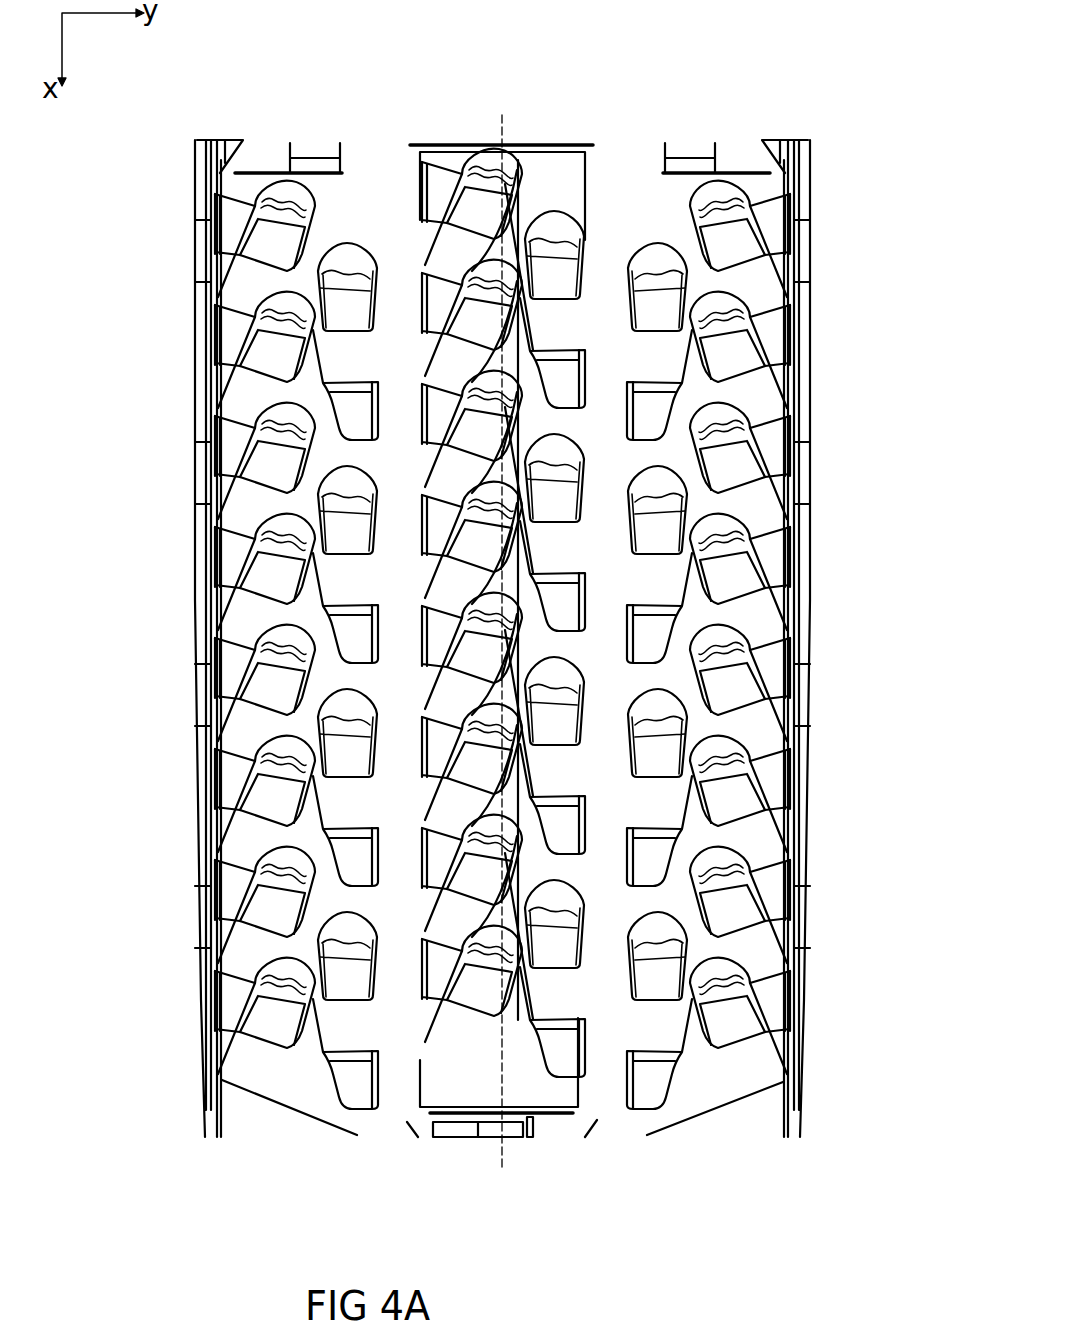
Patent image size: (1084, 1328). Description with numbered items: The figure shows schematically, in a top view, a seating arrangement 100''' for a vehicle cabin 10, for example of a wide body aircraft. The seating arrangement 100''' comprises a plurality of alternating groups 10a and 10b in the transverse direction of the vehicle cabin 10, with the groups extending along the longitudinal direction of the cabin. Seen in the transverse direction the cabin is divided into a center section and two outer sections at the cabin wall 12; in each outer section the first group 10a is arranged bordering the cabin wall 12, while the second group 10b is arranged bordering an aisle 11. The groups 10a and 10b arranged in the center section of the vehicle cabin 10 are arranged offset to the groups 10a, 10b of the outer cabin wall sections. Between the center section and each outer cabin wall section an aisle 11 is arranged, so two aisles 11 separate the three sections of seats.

The vehicle cabin 10 is at (562, 96).
The first group 10a is at (269, 128).
The second group 10b is at (356, 128).
The aisle 11 is at (405, 1208).
The cabin wall 12 is at (174, 386).
The seating arrangement 100''' is at (597, 104).